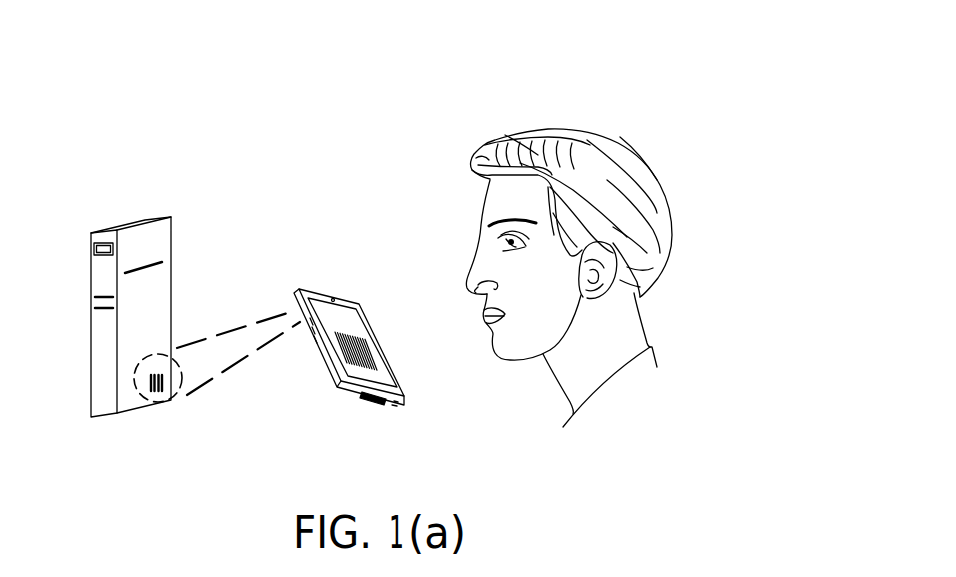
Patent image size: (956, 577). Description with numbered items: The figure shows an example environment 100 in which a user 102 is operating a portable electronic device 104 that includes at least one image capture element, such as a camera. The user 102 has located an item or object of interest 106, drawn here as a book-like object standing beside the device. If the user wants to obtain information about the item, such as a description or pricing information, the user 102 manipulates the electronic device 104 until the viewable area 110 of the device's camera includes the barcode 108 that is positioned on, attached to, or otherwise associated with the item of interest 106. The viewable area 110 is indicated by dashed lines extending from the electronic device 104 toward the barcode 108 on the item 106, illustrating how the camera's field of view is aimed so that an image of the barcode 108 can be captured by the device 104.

The environment 100 is at (764, 97).
The user 102 is at (448, 197).
The electronic device 104 is at (383, 404).
The item or object of interest 106 is at (128, 220).
The barcode 108 is at (168, 387).
The viewable area 110 is at (287, 304).